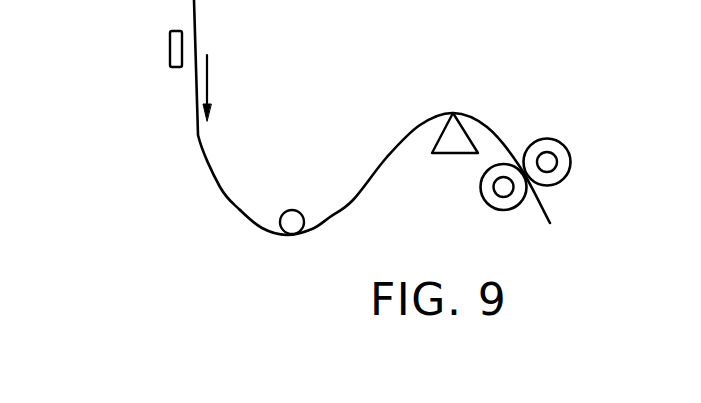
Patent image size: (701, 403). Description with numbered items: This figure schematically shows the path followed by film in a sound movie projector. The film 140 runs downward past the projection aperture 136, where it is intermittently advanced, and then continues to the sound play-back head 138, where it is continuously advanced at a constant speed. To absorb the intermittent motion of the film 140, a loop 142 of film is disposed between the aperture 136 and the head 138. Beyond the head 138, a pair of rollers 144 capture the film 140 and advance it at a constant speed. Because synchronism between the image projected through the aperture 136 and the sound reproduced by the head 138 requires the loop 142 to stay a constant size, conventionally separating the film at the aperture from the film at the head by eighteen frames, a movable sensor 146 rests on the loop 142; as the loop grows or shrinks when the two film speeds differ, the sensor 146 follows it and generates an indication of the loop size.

The projection aperture 136 is at (170, 41).
The sound play-back head 138 is at (457, 153).
The film 140 is at (198, 138).
The loop 142 is at (247, 227).
The pair of rollers 144 is at (563, 188).
The movable sensor 146 is at (287, 210).